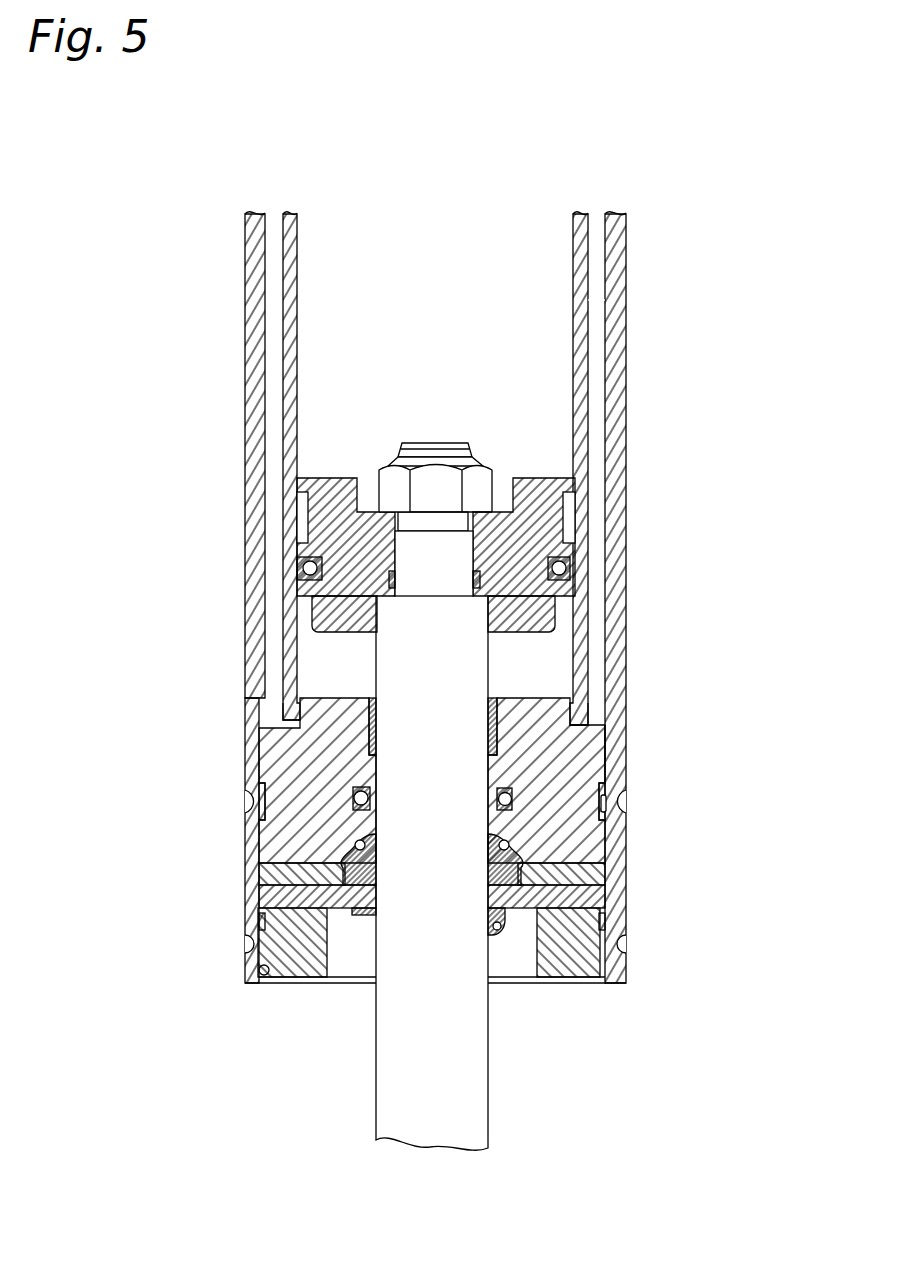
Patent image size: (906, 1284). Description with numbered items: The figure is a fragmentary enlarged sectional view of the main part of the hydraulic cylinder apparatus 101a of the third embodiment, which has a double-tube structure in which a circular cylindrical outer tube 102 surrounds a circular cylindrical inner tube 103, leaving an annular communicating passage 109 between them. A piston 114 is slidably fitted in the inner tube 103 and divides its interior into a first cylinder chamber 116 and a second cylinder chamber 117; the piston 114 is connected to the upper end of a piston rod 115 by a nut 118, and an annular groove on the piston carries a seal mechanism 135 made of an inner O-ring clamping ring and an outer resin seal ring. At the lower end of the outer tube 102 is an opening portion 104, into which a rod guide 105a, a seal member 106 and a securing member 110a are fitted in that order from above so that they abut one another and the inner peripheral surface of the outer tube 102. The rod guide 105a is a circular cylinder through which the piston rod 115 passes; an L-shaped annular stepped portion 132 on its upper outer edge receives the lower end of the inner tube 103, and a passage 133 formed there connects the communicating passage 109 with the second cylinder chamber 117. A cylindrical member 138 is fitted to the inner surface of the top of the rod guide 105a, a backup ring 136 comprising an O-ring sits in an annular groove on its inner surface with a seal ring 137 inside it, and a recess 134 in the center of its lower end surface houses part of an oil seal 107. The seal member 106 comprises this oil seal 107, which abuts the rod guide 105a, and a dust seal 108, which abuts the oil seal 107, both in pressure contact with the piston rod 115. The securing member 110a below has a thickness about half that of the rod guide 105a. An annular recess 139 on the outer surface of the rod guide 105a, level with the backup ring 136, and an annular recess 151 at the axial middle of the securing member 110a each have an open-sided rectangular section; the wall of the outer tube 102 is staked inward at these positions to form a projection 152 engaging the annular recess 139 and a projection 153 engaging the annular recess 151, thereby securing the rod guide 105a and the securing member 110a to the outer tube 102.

The hydraulic cylinder apparatus 101a is at (672, 251).
The outer tube 102 is at (613, 368).
The inner tube 103 is at (590, 417).
The opening portion 104 is at (268, 982).
The rod guide 105a is at (293, 752).
The seal member 106 is at (137, 840).
The oil seal 107 is at (268, 875).
The dust seal 108 is at (268, 897).
The communicating passage 109 is at (598, 333).
The securing member 110a is at (576, 957).
The piston 114 is at (545, 487).
The piston rod 115 is at (462, 1099).
The first cylinder chamber 116 is at (452, 324).
The second cylinder chamber 117 is at (549, 678).
The nut 118 is at (392, 487).
The annular stepped portion 132 is at (594, 722).
The passage 133 is at (318, 738).
The recess 134 is at (517, 843).
The seal mechanism 135 is at (560, 568).
The backup ring 136 is at (512, 802).
The seal ring 137 is at (355, 797).
The cylindrical member 138 is at (368, 705).
The annular recess 139 is at (606, 772).
The annular recess 151 is at (617, 917).
The projection 152 is at (612, 800).
The projection 153 is at (620, 946).